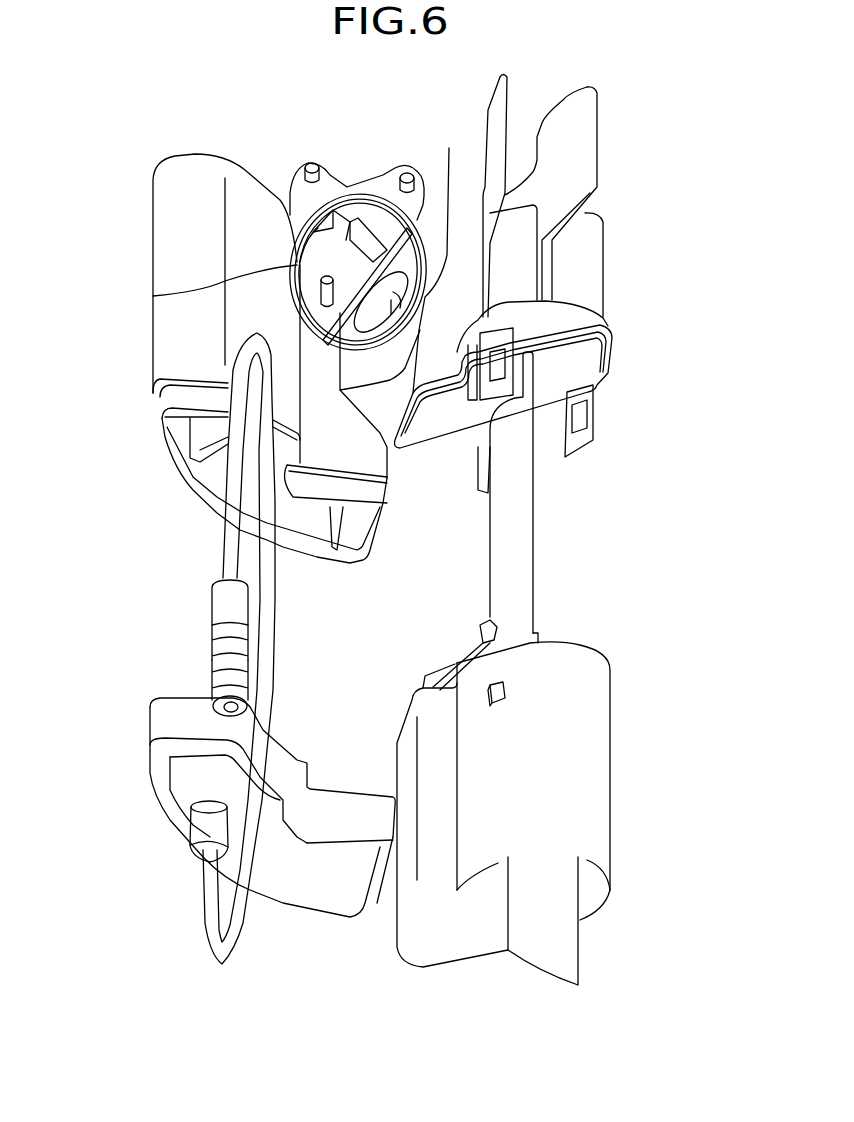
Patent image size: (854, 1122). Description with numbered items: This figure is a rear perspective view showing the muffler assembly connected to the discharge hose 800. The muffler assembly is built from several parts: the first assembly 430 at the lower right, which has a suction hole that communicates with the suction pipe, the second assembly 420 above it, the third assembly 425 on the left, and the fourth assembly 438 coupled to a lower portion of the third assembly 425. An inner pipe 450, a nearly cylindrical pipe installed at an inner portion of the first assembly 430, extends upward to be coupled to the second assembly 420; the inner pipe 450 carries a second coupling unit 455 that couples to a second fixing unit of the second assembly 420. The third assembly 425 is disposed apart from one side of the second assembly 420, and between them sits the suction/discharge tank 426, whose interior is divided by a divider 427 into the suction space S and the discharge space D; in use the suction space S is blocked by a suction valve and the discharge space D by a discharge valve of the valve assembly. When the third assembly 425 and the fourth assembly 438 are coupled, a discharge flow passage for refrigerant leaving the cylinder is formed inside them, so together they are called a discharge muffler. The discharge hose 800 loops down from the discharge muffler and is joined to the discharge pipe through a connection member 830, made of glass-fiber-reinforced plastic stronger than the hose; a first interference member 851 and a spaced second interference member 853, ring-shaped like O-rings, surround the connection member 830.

The second assembly 420 is at (593, 268).
The third assembly 425 is at (180, 228).
The suction/discharge tank 426 is at (358, 193).
The divider 427 is at (160, 296).
The first assembly 430 is at (587, 755).
The fourth assembly 438 is at (163, 726).
The inner pipe 450 is at (517, 537).
The second coupling unit 455 is at (530, 388).
The discharge hose 800 is at (230, 545).
The connection member 830 is at (220, 603).
The first interference member 851 is at (222, 647).
The second interference member 853 is at (222, 680).
The discharge space D is at (340, 251).
The suction space S is at (392, 307).